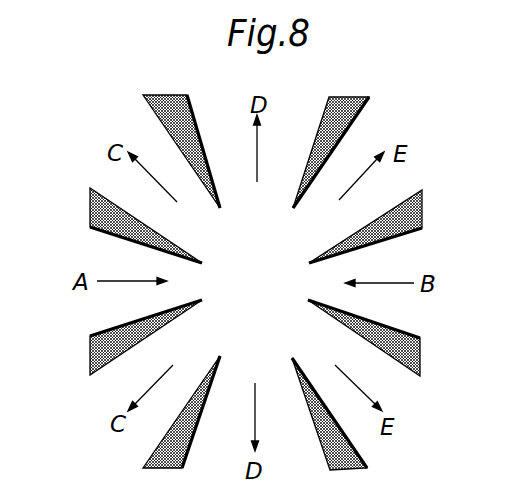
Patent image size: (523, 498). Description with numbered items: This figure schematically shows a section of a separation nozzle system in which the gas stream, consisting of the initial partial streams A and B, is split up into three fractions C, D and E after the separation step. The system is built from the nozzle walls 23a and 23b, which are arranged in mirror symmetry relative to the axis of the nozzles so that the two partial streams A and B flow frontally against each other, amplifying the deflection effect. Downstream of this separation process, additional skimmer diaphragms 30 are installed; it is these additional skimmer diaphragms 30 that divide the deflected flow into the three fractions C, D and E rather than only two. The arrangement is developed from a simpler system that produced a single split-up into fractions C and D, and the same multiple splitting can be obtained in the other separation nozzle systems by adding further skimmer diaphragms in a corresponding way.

The additional skimmer diaphragm 30 is at (192, 127).
The nozzle wall 23a is at (88, 207).
The nozzle wall 23b is at (424, 210).